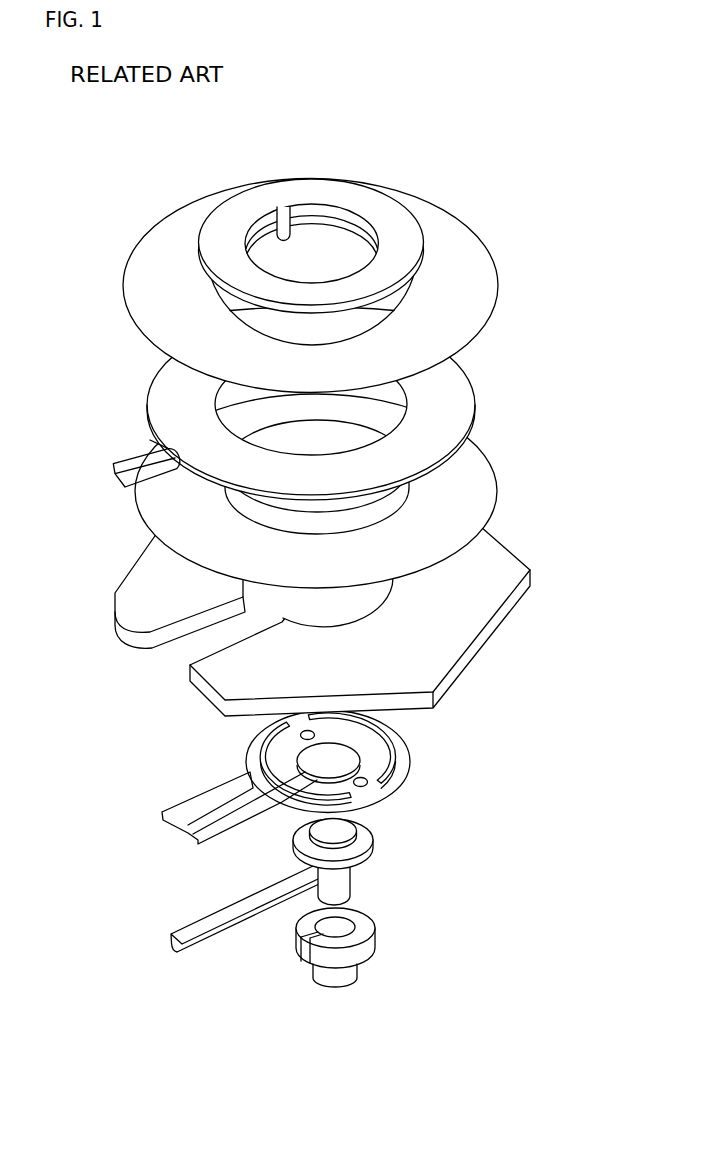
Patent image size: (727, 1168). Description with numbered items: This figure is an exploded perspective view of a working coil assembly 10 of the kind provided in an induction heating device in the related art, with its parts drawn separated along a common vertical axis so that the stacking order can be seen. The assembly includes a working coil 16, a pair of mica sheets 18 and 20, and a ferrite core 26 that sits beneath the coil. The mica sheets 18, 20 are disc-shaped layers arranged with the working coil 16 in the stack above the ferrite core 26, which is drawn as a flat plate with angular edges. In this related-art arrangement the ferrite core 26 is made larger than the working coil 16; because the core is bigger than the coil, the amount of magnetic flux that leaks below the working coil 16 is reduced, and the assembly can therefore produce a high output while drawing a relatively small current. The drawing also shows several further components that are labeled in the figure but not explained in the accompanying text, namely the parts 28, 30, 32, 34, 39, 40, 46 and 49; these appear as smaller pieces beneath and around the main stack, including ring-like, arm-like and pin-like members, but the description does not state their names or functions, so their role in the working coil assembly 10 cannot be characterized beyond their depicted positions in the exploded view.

The working coil assembly 10 is at (311, 552).
The working coil 16 is at (452, 397).
The mica sheet 18 is at (465, 308).
The mica sheet 20 is at (465, 488).
The ferrite core 26 is at (343, 624).
The plate edge portion 28 is at (433, 702).
The fixing member 30 is at (244, 302).
The bearing holder 32 is at (301, 778).
The pin 34 is at (267, 223).
The arm 39 is at (183, 930).
The shaft pin 40 is at (343, 832).
The hole 46 is at (382, 775).
The nut 49 is at (360, 920).